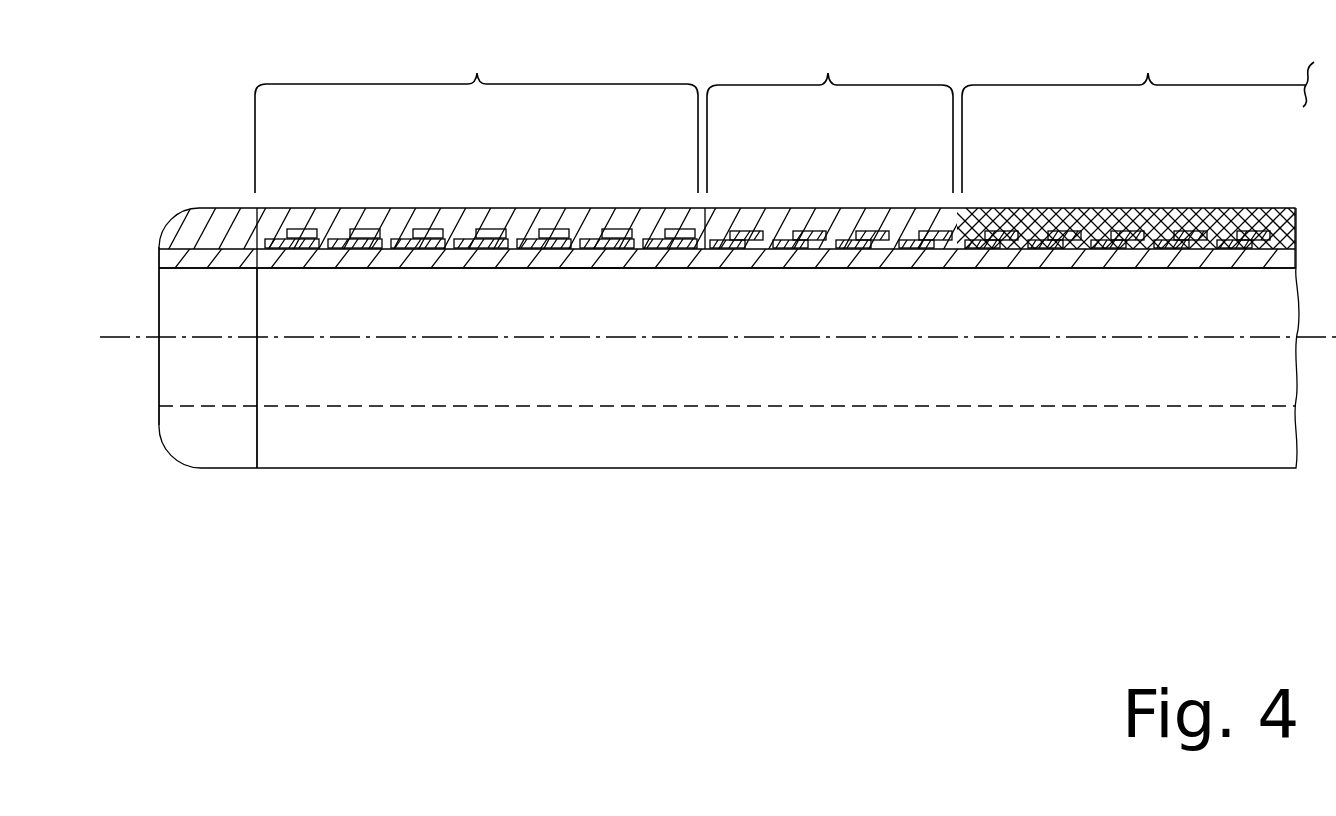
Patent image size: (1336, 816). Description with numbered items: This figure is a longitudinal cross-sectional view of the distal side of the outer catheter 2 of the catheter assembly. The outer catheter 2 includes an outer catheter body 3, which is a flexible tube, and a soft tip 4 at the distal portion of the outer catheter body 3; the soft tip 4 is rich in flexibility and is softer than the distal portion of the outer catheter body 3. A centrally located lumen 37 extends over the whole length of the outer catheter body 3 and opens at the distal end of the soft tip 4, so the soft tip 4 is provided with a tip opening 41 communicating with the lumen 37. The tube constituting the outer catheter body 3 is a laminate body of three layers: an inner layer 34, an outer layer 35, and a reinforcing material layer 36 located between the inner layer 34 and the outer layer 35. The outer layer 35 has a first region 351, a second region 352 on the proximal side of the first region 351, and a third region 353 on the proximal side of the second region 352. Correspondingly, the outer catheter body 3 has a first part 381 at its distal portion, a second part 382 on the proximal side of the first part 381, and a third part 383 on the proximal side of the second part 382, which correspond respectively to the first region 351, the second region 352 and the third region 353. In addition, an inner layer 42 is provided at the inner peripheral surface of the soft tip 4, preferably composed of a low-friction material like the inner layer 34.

The outer catheter 2 is at (978, 518).
The outer catheter body 3 is at (1055, 476).
The soft tip 4 is at (198, 213).
The inner layer 34 is at (768, 262).
The outer layer 35 is at (1108, 203).
The reinforcing material layer 36 is at (588, 262).
The lumen 37 is at (443, 315).
The tip opening 41 is at (185, 312).
The inner layer 42 is at (159, 255).
The first region 351 is at (402, 207).
The second region 352 is at (838, 212).
The third region 353 is at (1165, 212).
The first part 381 is at (476, 114).
The second part 382 is at (830, 114).
The third part 383 is at (1138, 114).